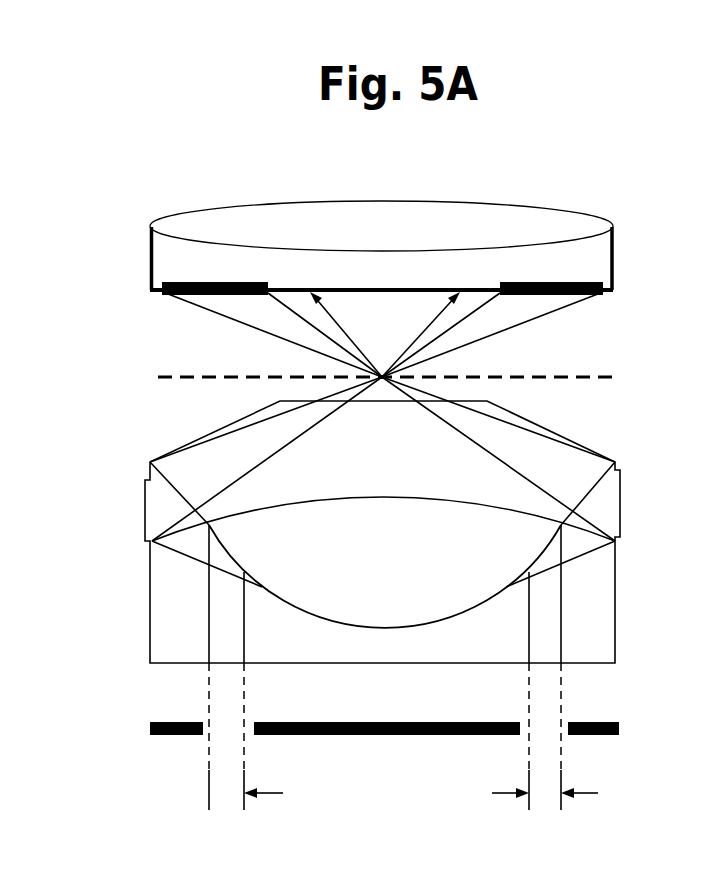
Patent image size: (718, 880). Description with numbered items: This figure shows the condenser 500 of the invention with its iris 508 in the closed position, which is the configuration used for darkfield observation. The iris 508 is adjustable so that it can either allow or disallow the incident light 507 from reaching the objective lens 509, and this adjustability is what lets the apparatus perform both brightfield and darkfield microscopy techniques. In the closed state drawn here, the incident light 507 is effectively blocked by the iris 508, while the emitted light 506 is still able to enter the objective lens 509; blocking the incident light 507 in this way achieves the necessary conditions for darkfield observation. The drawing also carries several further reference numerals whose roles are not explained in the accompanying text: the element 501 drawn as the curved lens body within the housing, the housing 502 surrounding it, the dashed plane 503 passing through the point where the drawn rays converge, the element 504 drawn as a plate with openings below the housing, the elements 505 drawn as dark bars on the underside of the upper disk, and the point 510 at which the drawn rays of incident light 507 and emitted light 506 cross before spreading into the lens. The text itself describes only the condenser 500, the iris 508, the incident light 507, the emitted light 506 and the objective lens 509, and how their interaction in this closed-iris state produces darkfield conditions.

The condenser 500 is at (120, 173).
The lens 501 is at (263, 590).
The lens housing 502 is at (145, 488).
The focal plane 503 is at (156, 377).
The aperture plate 504 is at (148, 727).
The light emitting elements 505 is at (558, 312).
The emitted light 506 is at (443, 332).
The incident light 507 is at (232, 326).
The iris 508 is at (637, 282).
The objective lens 509 is at (552, 210).
The focal point 510 is at (384, 373).